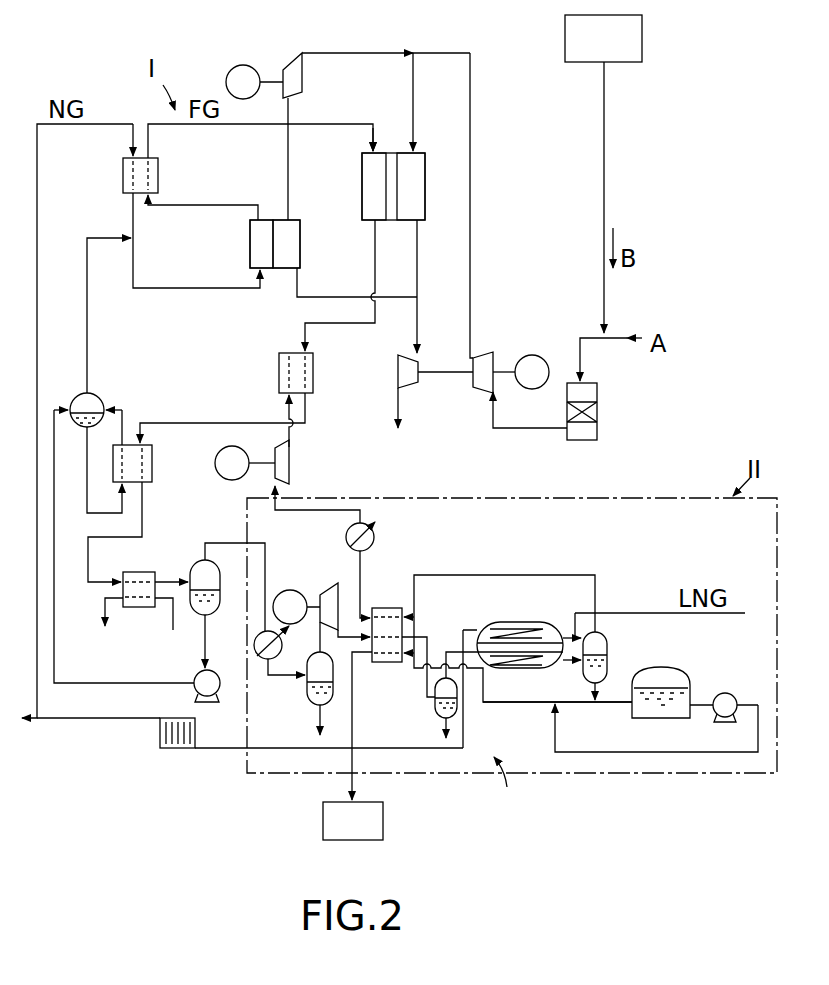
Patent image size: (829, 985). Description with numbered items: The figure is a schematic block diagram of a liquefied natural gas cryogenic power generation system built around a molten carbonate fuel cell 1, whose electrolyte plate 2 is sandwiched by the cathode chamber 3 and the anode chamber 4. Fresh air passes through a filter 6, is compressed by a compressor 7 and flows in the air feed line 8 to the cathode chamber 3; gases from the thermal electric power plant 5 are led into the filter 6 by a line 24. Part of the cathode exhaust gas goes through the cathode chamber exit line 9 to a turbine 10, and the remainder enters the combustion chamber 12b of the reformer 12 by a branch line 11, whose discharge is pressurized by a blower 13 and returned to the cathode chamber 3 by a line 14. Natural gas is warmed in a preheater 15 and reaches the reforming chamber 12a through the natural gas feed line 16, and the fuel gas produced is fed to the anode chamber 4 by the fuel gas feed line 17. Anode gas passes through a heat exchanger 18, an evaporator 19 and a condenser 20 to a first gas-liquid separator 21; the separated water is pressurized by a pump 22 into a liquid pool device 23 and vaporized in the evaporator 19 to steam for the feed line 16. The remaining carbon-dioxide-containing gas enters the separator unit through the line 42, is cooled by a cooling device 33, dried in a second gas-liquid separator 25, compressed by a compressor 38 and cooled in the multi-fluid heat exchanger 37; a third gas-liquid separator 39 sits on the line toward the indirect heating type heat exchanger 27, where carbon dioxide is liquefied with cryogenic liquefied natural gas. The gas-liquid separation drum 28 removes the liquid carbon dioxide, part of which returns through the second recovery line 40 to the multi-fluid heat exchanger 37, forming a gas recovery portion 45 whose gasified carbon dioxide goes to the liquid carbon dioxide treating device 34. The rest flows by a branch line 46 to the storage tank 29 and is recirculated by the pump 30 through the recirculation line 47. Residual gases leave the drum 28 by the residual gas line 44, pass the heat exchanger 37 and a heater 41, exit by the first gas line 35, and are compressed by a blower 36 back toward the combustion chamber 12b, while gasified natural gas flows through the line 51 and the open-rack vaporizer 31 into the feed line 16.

The molten carbonate fuel cell 1 is at (428, 150).
The electrolyte plate 2 is at (393, 152).
The cathode chamber 3 is at (425, 207).
The anode chamber 4 is at (362, 190).
The thermal electric power plant 5 is at (565, 58).
The filter 6 is at (597, 430).
The compressor 7 is at (487, 355).
The air feed line 8 is at (470, 120).
The cathode chamber exit line 9 is at (417, 286).
The turbine 10 is at (398, 380).
The branch line 11 is at (352, 297).
The reformer 12 is at (274, 213).
The reforming chamber 12a is at (250, 246).
The combustion chamber 12b is at (300, 247).
The blower 13 is at (290, 68).
The line 14 is at (353, 53).
The preheater 15 is at (123, 180).
The natural gas feed line 16 is at (213, 288).
The fuel gas feed line 17 is at (210, 205).
The heat exchanger 18 is at (279, 378).
The evaporator 19 is at (152, 472).
The condenser 20 is at (140, 607).
The first gas-liquid separator 21 is at (192, 566).
The pump 22 is at (194, 679).
The liquid pool device 23 is at (102, 400).
The line 24 is at (604, 180).
The second gas-liquid separator 25 is at (305, 708).
The indirect heating type heat exchanger 27 is at (530, 622).
The CO2 gas-liquid separation drum 28 is at (607, 648).
The storage tank 29 is at (668, 718).
The pump 30 is at (726, 693).
The open-rack vaporizer 31 is at (165, 749).
The cooling device 33 is at (254, 648).
The liquid CO2 treating device 34 is at (323, 829).
The first gas line 35 is at (289, 437).
The blower 36 is at (290, 470).
The multi-fluid heat exchanger 37 is at (394, 608).
The compressor 38 is at (321, 595).
The third gas-liquid separator 39 is at (437, 715).
The second recovery line 40 is at (495, 703).
The heater 41 is at (374, 538).
The line 42 is at (266, 572).
The residual gas line 44 is at (572, 575).
The gas recovery portion 45 is at (516, 785).
The branch line 46 is at (619, 703).
The recirculation line 47 is at (648, 752).
The line 51 is at (440, 752).